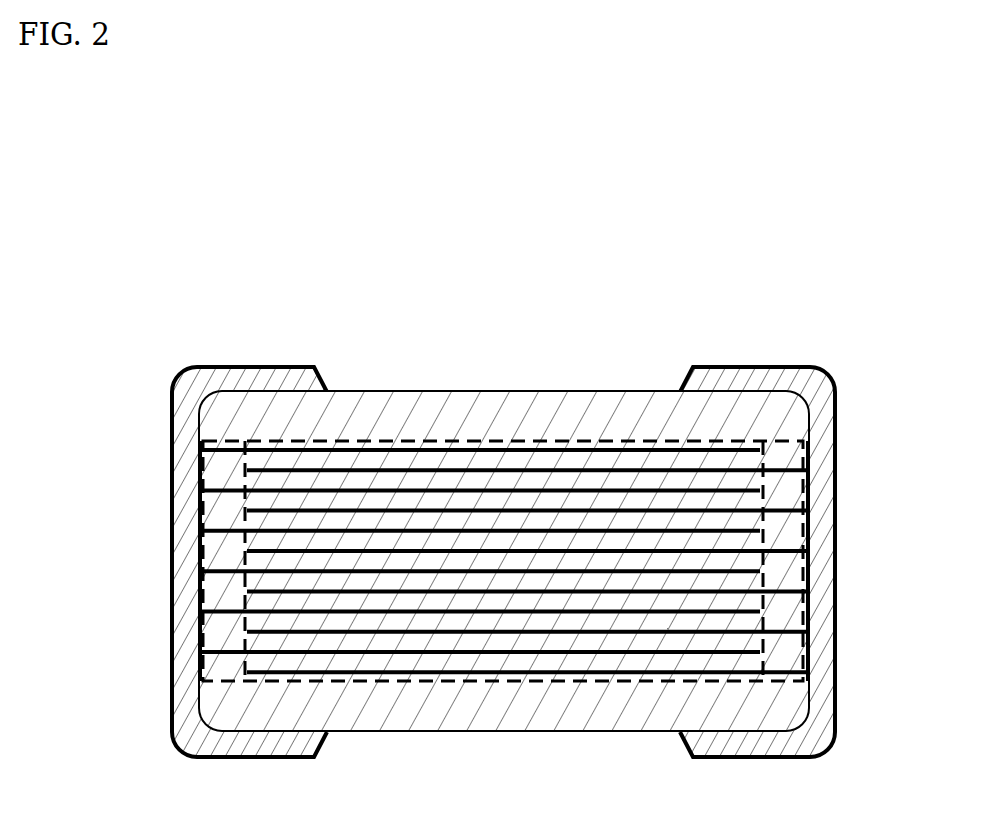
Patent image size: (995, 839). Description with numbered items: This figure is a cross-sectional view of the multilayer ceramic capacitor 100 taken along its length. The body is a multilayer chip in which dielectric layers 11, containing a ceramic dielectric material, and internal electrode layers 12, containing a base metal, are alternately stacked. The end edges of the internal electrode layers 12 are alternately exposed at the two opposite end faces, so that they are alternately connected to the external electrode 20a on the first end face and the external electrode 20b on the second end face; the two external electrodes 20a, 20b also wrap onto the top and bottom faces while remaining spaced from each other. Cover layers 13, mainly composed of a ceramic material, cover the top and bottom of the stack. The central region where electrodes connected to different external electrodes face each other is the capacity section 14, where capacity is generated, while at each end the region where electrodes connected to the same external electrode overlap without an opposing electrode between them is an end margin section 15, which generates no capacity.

The multilayer ceramic capacitor 100 is at (497, 507).
The dielectric layer 11 is at (665, 660).
The internal electrode layer 12 is at (445, 615).
The cover layer 13 is at (397, 408).
The capacity section 14 is at (527, 440).
The end margin section 15 is at (225, 440).
The external electrode 20a is at (198, 367).
The external electrode 20b is at (797, 365).